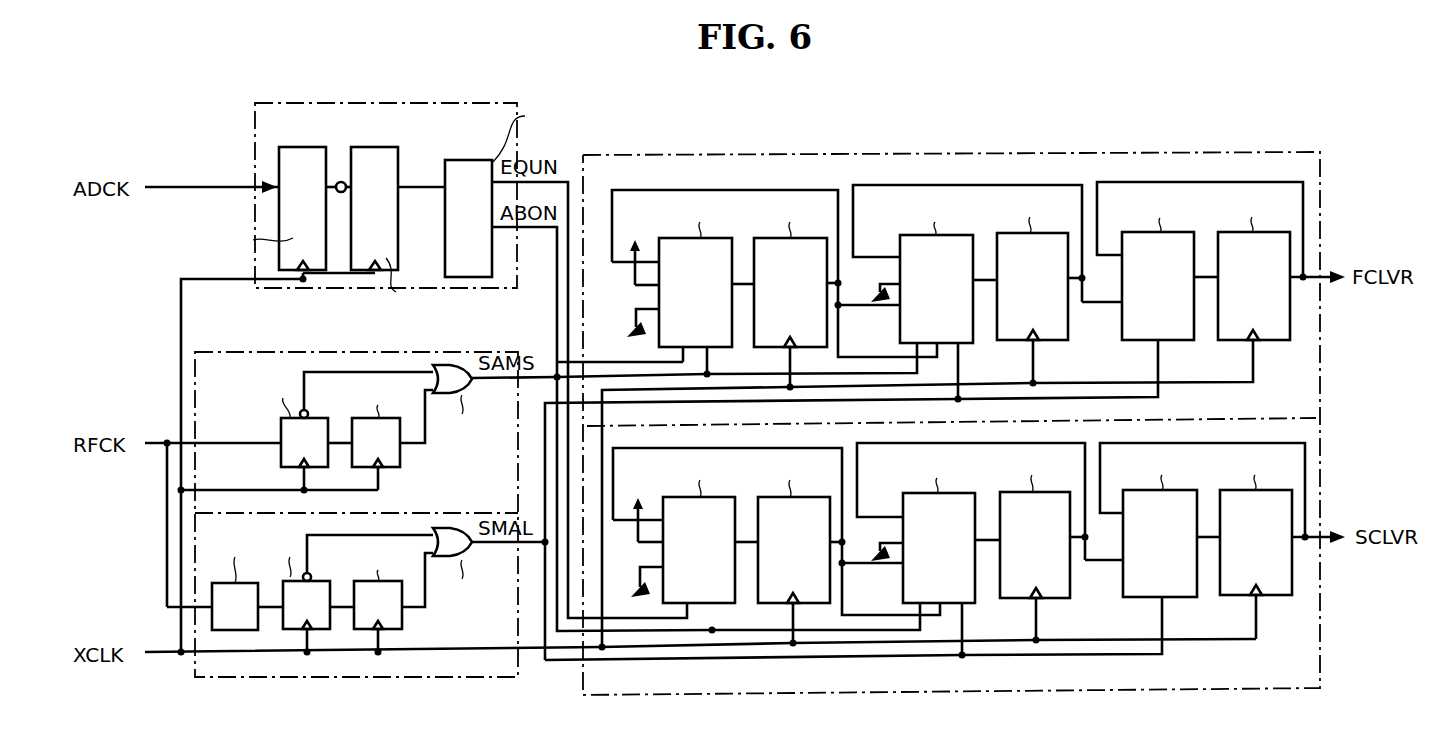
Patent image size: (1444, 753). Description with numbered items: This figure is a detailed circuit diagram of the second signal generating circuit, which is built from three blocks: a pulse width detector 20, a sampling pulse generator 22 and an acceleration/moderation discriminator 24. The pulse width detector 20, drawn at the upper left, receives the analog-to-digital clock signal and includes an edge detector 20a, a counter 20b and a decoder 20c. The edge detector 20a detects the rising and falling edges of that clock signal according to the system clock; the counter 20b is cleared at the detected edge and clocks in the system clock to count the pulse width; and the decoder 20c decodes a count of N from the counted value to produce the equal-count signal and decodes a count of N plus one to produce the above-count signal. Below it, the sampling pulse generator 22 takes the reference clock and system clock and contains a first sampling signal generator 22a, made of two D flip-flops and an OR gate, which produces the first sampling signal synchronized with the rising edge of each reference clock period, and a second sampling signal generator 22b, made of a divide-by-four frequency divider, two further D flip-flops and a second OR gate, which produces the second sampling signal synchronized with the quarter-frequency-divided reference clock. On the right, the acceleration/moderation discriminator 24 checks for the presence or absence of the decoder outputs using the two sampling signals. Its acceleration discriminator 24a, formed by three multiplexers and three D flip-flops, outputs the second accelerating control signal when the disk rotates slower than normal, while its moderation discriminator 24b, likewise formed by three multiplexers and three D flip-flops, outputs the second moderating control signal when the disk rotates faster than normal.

The pulse width detector 20 is at (360, 289).
The edge detector 20a is at (300, 147).
The counter 20b is at (372, 147).
The decoder 20c is at (465, 160).
The sampling pulse generator 22 is at (355, 677).
The first sampling signal generator 22a is at (372, 427).
The second sampling signal generator 22b is at (346, 590).
The acceleration/moderation discriminator 24 is at (958, 152).
The acceleration discriminator 24a is at (957, 293).
The moderation discriminator 24b is at (959, 562).